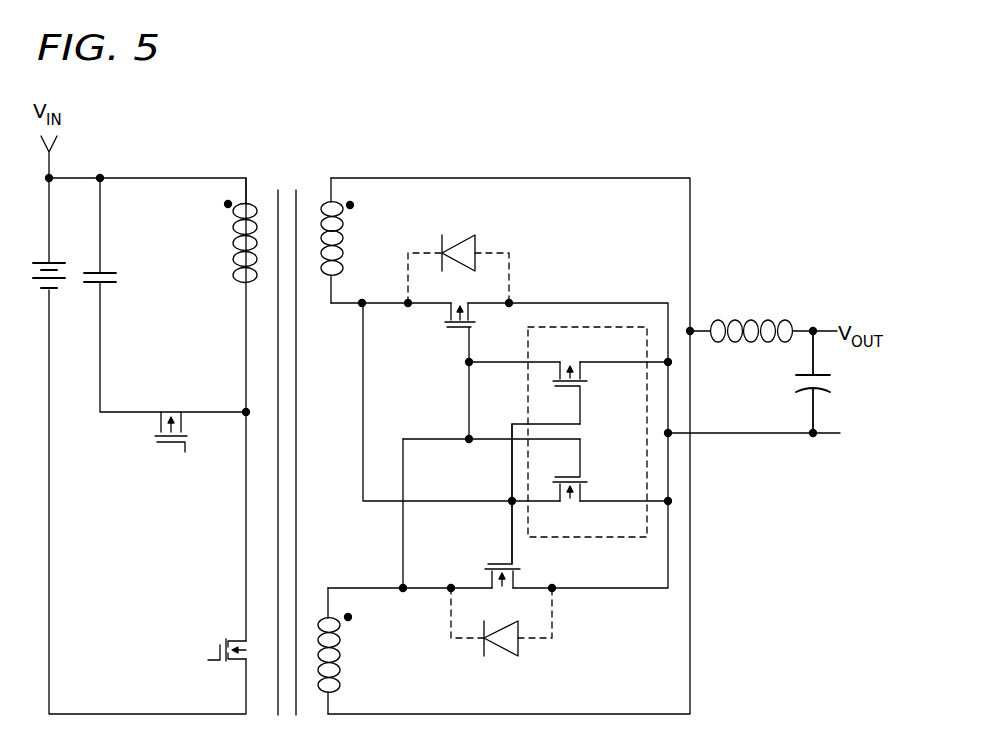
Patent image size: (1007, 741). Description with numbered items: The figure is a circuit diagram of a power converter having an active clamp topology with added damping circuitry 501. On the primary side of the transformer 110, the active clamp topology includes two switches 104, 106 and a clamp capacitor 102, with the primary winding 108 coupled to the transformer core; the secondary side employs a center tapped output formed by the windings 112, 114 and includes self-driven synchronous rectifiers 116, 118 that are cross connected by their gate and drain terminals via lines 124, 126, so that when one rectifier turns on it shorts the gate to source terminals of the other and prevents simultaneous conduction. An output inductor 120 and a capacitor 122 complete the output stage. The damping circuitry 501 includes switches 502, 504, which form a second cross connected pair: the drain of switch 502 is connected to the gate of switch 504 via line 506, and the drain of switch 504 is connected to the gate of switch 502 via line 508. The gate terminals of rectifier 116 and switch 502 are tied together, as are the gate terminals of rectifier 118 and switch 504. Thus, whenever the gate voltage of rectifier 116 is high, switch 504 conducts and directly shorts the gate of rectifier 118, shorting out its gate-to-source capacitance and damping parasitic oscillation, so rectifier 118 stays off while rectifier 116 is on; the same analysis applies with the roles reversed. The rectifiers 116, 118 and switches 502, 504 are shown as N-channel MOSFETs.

The clamp capacitor 102 is at (120, 278).
The switch 104 is at (157, 440).
The switch 106 is at (222, 638).
The primary winding 108 is at (231, 232).
The transformer 110 is at (291, 172).
The first secondary winding 112 is at (346, 238).
The second secondary winding 114 is at (343, 677).
The self-driven synchronous rectifier 116 is at (443, 330).
The self-driven synchronous rectifier 118 is at (490, 561).
The output inductor 120 is at (750, 318).
The capacitor 122 is at (797, 383).
The line 124 is at (364, 380).
The line 126 is at (401, 531).
The damping circuitry 501 is at (592, 540).
The switch 502 is at (586, 385).
The switch 504 is at (586, 478).
The line 506 is at (438, 436).
The line 508 is at (509, 473).